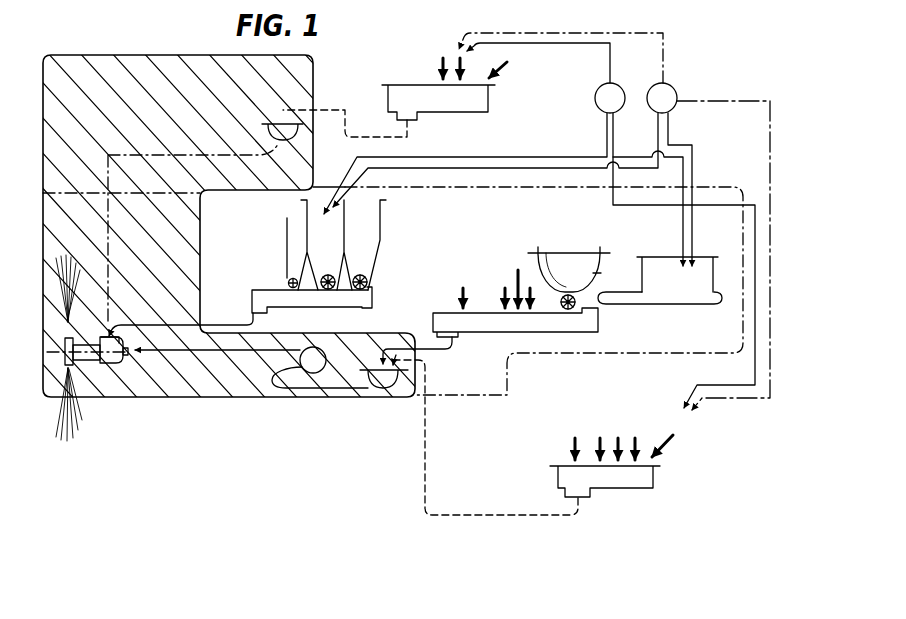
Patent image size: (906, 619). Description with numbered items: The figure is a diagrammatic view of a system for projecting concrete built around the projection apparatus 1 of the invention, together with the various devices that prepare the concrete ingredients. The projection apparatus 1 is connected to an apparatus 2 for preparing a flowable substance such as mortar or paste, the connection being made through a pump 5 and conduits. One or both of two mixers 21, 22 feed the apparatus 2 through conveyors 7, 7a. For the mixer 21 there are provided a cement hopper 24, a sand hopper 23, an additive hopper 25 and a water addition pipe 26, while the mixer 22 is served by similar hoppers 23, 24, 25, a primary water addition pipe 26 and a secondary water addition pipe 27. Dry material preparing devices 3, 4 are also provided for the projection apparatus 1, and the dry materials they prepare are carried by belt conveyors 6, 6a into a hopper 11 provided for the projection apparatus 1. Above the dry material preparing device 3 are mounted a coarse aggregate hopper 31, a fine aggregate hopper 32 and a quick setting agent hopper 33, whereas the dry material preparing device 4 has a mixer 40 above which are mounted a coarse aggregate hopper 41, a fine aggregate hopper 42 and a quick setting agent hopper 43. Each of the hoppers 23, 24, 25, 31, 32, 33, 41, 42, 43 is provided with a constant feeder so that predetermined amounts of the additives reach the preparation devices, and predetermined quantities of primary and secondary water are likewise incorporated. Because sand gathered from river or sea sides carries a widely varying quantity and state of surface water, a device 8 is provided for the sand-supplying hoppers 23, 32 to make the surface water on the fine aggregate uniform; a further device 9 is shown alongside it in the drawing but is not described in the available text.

The projection apparatus 1 is at (95, 364).
The hopper 11 is at (93, 357).
The apparatus for preparing a flowable substance 2 is at (383, 395).
The dry material preparing device 3 is at (357, 305).
The coarse aggregate hopper 31 is at (372, 259).
The fine aggregate hopper 32 is at (330, 233).
The quick setting agent hopper 33 is at (290, 228).
The dry material preparing device 4 is at (305, 128).
The mixer 40 is at (472, 107).
The coarse aggregate hopper 41 is at (507, 66).
The fine aggregate hopper 42 is at (463, 67).
The quick setting agent hopper 43 is at (440, 67).
The pump 5 is at (312, 370).
The belt conveyor 6 is at (227, 323).
The belt conveyor 6a is at (108, 283).
The conveyor 7 is at (433, 353).
The conveyor 7a is at (428, 440).
The device for making uniform the surface water on fine aggregate 8 is at (607, 90).
The valve 9 is at (667, 90).
The mixer 21 is at (472, 332).
The mixer 22 is at (630, 487).
The sand hopper 23 is at (650, 267).
The cement hopper 24 is at (600, 276).
The additive hopper 25 is at (529, 286).
The water addition pipe 26 is at (516, 268).
The secondary water addition pipe 27 is at (502, 286).